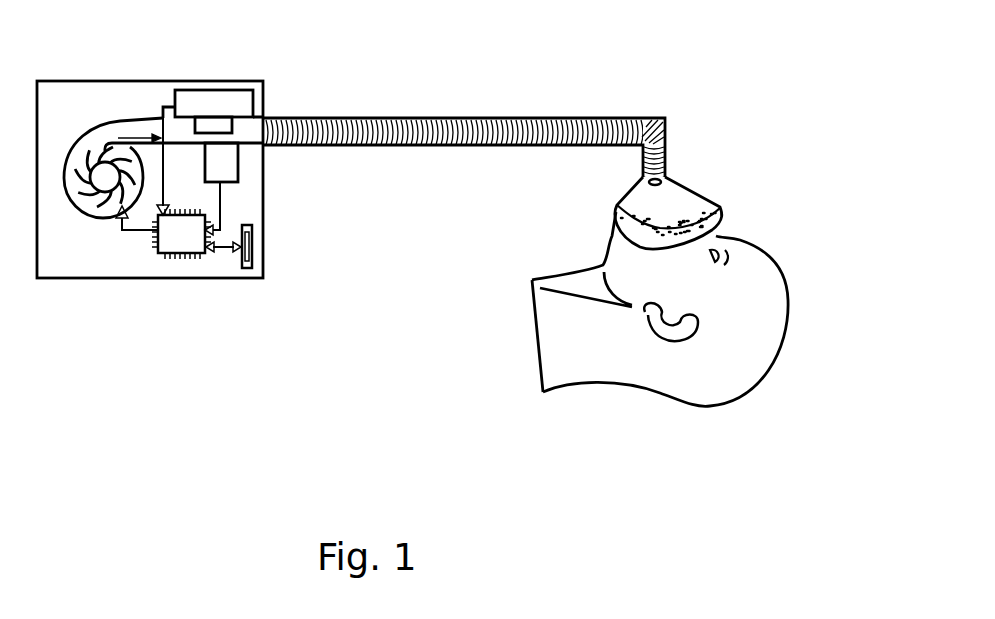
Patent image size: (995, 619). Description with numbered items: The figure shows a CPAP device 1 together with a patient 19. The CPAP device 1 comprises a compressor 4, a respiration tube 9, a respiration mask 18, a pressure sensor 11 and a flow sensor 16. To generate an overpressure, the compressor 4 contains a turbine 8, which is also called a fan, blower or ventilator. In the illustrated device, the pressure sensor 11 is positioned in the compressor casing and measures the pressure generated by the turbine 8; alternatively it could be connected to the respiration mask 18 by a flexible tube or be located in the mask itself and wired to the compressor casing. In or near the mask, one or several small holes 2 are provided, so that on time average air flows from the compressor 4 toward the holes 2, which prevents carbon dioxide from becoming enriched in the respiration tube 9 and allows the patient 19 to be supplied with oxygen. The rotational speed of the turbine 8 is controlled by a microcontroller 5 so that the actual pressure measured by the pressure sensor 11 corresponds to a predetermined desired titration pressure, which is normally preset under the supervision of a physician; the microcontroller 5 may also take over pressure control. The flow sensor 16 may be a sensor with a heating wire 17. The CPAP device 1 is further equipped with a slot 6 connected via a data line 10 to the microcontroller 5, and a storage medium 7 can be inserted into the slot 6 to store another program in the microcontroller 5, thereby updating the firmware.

The CPAP device 1 is at (208, 396).
The holes 2 is at (666, 180).
The compressor 4 is at (62, 120).
The microcontroller 5 is at (172, 243).
The slot 6 is at (252, 228).
The storage medium 7 is at (252, 265).
The turbine 8 is at (108, 183).
The respiration tube 9 is at (350, 146).
The data line 10 is at (222, 252).
The pressure sensor 11 is at (215, 173).
The flow sensor 16 is at (223, 100).
The heating wire 17 is at (212, 128).
The respiration mask 18 is at (618, 210).
The patient 19 is at (698, 372).